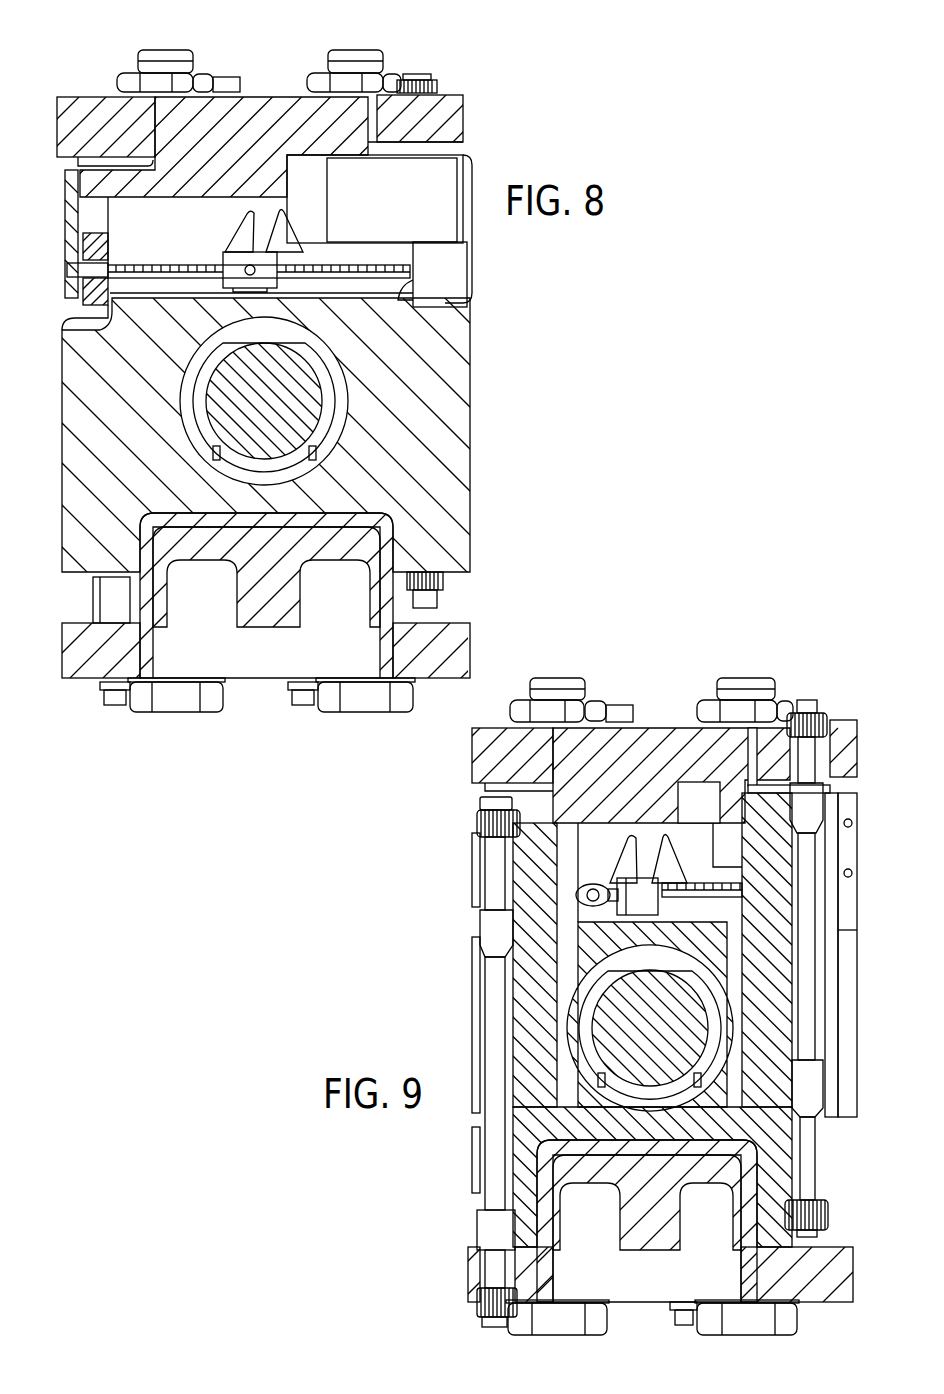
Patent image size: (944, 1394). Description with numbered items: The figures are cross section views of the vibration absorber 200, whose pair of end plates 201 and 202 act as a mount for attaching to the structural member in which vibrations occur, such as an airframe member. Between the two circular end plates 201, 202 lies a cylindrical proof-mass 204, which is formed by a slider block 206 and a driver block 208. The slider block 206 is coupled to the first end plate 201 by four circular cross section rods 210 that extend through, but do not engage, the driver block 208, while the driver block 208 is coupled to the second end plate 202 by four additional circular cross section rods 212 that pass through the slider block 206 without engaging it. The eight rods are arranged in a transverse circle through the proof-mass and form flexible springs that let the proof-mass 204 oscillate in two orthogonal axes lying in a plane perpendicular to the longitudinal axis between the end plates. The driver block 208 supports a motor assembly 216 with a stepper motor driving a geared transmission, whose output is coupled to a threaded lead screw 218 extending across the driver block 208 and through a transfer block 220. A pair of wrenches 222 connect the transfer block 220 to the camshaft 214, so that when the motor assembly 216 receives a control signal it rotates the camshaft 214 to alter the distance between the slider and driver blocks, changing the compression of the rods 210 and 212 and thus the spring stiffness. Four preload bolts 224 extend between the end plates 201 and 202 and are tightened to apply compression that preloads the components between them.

In FIG. 8, the vibration absorber 200 is at (278, 66).
In FIG. 9, the vibration absorber 200 is at (667, 690).
In FIG. 8, the first end plate 201 is at (58, 133).
In FIG. 9, the first end plate 201 is at (480, 747).
In FIG. 8, the second end plate 202 is at (70, 655).
In FIG. 9, the second end plate 202 is at (472, 1268).
In FIG. 8, the proof-mass 204 is at (359, 435).
In FIG. 9, the proof-mass 204 is at (510, 1020).
In FIG. 8, the slider block 206 is at (62, 397).
In FIG. 9, the slider block 206 is at (472, 1157).
In FIG. 9, the driver block 208 is at (472, 897).
In FIG. 8, the circular cross section rods 210 is at (416, 78).
In FIG. 9, the circular cross section rods 210 is at (805, 1173).
In FIG. 8, the additional circular cross section rods 212 is at (112, 700).
In FIG. 9, the additional circular cross section rods 212 is at (495, 1327).
In FIG. 8, the camshaft 214 is at (288, 416).
In FIG. 9, the camshaft 214 is at (672, 1039).
In FIG. 8, the motor assembly 216 is at (414, 195).
In FIG. 8, the threaded lead screw 218 is at (150, 262).
In FIG. 9, the threaded lead screw 218 is at (585, 891).
In FIG. 8, the transfer block 220 is at (232, 251).
In FIG. 9, the transfer block 220 is at (637, 896).
In FIG. 8, the wrenches 222 is at (247, 227).
In FIG. 9, the wrenches 222 is at (630, 851).
In FIG. 8, the preload bolts 224 is at (170, 52).
In FIG. 9, the preload bolts 224 is at (562, 678).